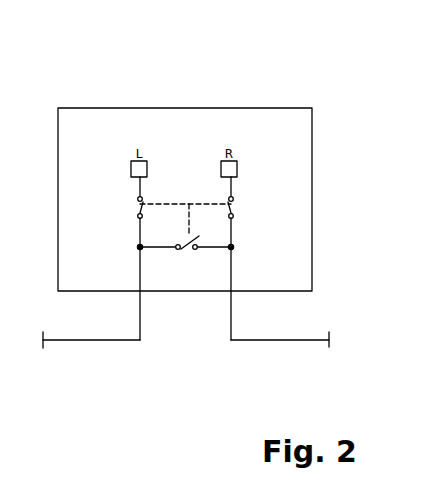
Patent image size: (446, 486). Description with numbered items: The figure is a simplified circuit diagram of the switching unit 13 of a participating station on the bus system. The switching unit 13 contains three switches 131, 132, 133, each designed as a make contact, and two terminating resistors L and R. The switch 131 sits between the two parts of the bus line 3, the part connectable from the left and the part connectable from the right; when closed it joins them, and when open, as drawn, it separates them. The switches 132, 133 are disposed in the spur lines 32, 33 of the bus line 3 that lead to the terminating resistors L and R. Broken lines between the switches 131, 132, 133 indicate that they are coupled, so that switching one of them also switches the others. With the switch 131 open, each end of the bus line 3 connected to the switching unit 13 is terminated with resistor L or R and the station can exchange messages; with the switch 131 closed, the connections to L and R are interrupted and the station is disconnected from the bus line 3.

The switching unit 13 is at (183, 108).
The switch 131 is at (187, 250).
The switch 132 is at (138, 210).
The switch 133 is at (233, 210).
The spur line 32 is at (140, 268).
The spur line 33 is at (231, 266).
The bus line 3 is at (93, 340).